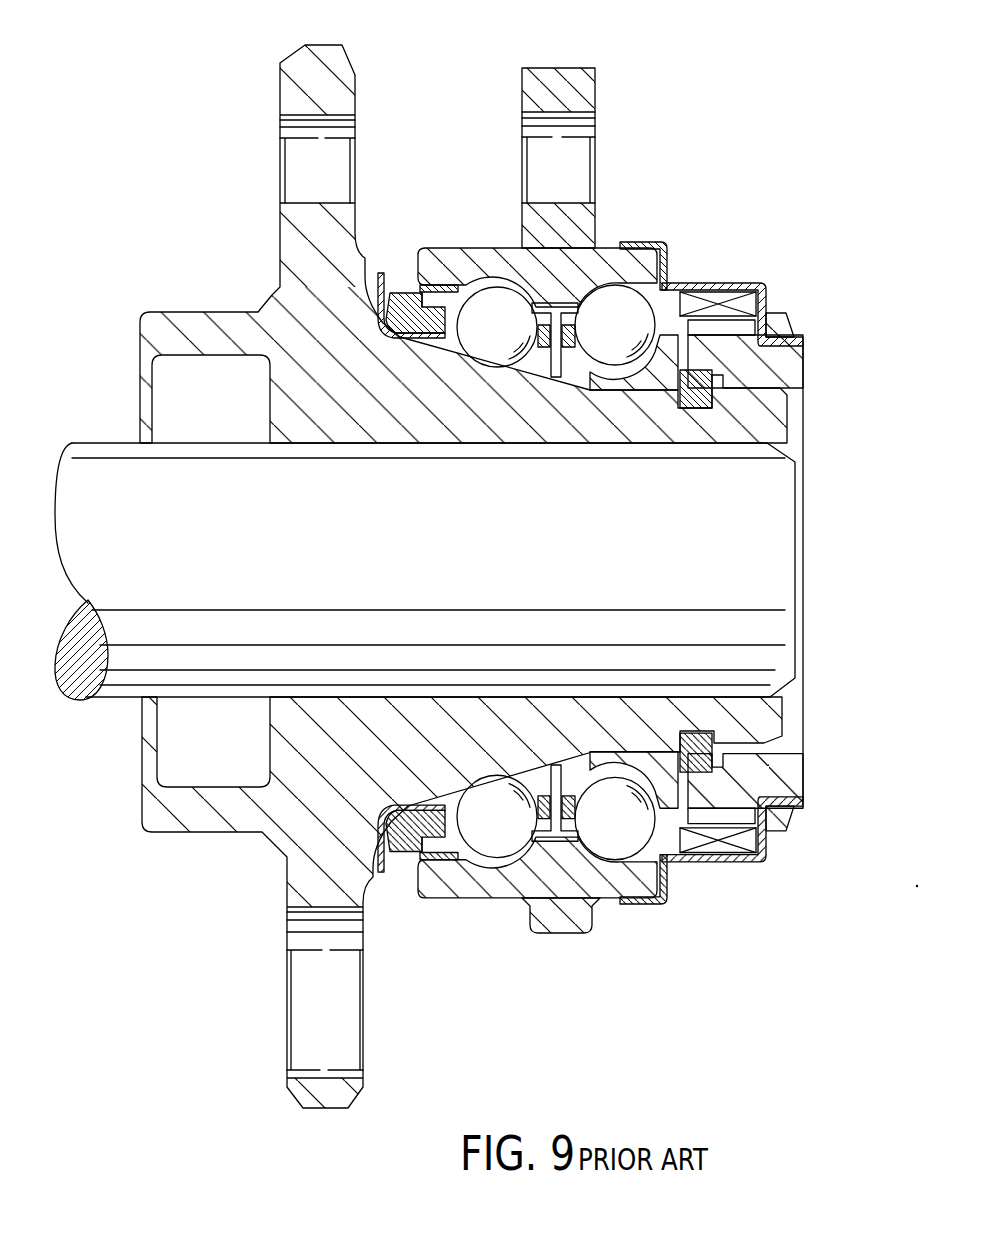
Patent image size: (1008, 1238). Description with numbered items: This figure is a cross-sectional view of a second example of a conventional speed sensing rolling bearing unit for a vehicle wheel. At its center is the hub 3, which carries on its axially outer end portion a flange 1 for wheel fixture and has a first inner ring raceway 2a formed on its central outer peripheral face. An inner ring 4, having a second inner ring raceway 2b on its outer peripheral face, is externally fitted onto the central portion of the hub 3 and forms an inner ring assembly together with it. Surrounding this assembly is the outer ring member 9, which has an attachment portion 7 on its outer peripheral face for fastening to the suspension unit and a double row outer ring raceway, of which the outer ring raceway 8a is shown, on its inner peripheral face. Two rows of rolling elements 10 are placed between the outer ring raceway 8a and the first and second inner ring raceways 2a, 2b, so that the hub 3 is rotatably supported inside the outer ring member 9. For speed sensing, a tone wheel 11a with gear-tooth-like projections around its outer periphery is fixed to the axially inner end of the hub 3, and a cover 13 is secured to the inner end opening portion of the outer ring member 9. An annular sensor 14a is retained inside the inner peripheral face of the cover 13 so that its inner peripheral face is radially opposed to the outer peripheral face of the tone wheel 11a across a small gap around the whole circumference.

The flange 1 is at (293, 245).
The first inner ring raceway 2a is at (438, 892).
The second inner ring raceway 2b is at (604, 845).
The hub 3 is at (378, 372).
The inner ring 4 is at (655, 767).
The attachment portion 7 is at (530, 90).
The outer ring raceway 8a is at (478, 287).
The outer ring member 9 is at (573, 235).
The rolling elements 10 is at (598, 350).
The tone wheel 11a is at (773, 777).
The cover 13 is at (740, 287).
The sensor 14a is at (730, 855).